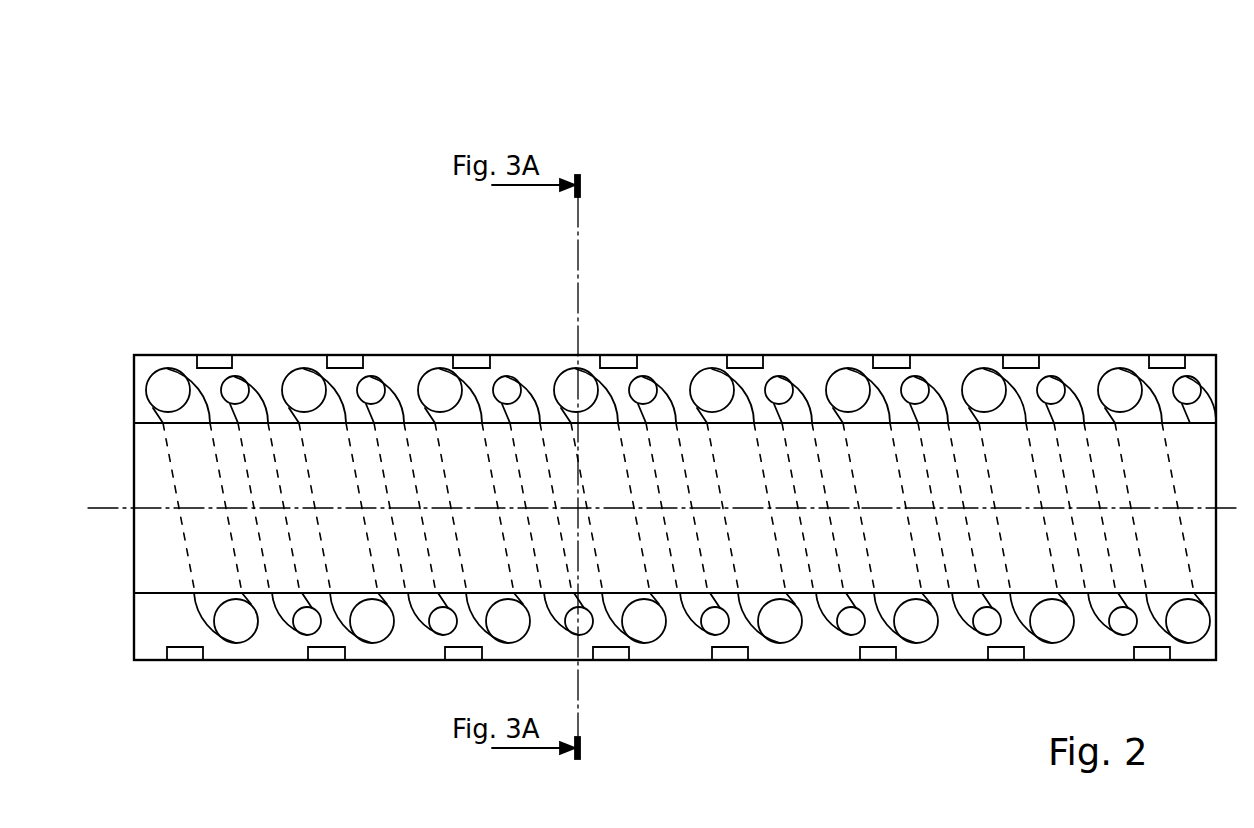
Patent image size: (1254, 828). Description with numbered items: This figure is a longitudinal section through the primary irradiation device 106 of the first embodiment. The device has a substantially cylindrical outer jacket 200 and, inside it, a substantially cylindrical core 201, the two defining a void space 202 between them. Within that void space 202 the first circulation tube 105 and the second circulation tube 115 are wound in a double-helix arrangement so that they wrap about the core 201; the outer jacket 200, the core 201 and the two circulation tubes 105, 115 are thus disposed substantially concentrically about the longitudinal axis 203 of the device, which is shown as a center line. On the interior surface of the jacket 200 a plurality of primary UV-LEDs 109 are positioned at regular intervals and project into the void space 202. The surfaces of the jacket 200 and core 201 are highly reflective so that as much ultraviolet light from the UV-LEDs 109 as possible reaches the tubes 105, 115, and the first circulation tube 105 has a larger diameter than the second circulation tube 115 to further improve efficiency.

The primary irradiation device 106 is at (155, 107).
The first circulation tube 105 is at (165, 390).
The second circulation tube 115 is at (237, 388).
The primary UV-LEDs 109 is at (215, 362).
The outer jacket 200 is at (285, 337).
The core 201 is at (165, 593).
The void space 202 is at (400, 372).
The longitudinal axis 203 is at (102, 507).